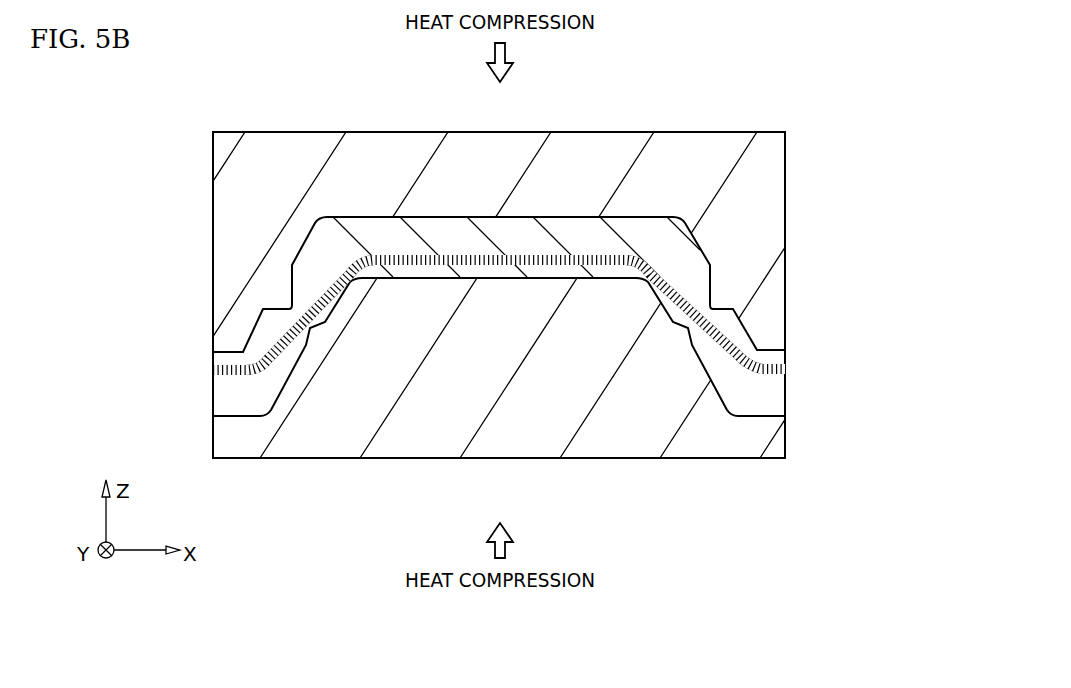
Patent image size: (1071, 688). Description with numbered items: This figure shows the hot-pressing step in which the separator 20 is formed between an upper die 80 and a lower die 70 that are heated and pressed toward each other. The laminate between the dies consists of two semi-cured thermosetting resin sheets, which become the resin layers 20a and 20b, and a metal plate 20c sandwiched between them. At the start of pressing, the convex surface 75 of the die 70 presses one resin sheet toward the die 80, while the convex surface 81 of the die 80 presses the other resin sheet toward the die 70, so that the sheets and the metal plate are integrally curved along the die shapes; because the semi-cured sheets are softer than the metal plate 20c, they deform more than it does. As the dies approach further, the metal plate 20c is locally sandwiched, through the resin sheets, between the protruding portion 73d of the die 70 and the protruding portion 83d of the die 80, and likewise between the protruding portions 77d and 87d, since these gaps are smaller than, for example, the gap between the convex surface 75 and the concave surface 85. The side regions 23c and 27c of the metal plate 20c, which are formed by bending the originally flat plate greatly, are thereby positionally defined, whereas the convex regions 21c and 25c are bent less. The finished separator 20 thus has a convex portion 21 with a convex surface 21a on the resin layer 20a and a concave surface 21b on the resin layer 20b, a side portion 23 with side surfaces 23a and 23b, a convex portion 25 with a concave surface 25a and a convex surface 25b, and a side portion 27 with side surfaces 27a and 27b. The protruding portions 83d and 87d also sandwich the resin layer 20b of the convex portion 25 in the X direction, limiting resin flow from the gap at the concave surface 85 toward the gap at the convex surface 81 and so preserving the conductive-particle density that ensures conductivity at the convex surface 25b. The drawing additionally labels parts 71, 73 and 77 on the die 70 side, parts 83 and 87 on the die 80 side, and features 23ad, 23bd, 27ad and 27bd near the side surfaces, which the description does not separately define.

The die 80 is at (786, 131).
The die 70 is at (722, 506).
The separator 20 is at (797, 413).
The resin layer 20a is at (793, 398).
The resin layer 20b is at (793, 357).
The metal plate 20c is at (793, 370).
The convex portion 21 is at (345, 310).
The convex surface 21a is at (226, 405).
The concave surface 21b is at (217, 363).
The convex region 21c is at (215, 377).
The side portion 23 is at (312, 270).
The side surface 23a is at (372, 322).
The left inclined pressing surface end 23ad is at (330, 345).
The side surface 23b is at (293, 262).
The left inclined portion corner end 23bd is at (292, 305).
The side region 23c is at (328, 255).
The convex portion 25 is at (583, 230).
The concave surface 25a is at (505, 288).
The convex surface 25b is at (455, 215).
The convex region 25c is at (502, 216).
The side portion 27 is at (690, 255).
The side surface 27a is at (700, 330).
The right inclined pressing surface end 27ad is at (673, 305).
The side surface 27b is at (708, 262).
The right inclined portion corner end 27bd is at (713, 304).
The side region 27c is at (686, 245).
The lower die end block 71 is at (252, 417).
The lower die left insert 73 is at (307, 333).
The protruding portion 73d is at (335, 378).
The convex surface 75 is at (463, 268).
The lower die right insert 77 is at (687, 333).
The protruding portion 77d is at (693, 345).
The convex surface 81 is at (250, 336).
The upper die left insert 83 is at (262, 310).
The protruding portion 83d is at (291, 298).
The concave surface 85 is at (382, 216).
The upper die right insert 87 is at (736, 312).
The protruding portion 87d is at (760, 348).